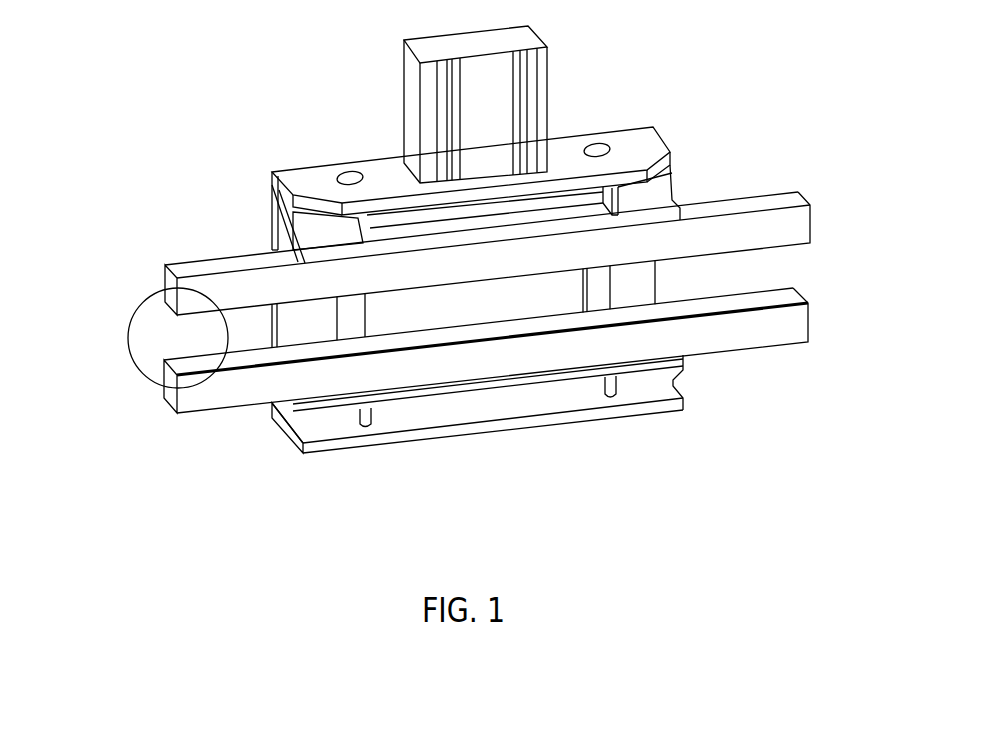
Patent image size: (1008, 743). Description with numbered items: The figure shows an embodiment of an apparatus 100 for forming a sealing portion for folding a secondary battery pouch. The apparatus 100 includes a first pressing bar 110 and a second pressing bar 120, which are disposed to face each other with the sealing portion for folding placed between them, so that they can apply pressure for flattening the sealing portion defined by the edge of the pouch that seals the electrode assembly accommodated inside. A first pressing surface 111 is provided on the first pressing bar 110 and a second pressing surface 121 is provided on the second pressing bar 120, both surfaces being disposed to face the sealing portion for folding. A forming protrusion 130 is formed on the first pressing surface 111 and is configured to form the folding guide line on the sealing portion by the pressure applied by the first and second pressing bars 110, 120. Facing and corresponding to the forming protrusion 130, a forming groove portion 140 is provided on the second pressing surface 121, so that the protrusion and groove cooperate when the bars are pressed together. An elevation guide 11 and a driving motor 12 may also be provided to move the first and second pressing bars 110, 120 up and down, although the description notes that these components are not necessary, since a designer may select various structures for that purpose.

The apparatus for forming a sealing portion for folding 100 is at (165, 94).
The driving motor 12 is at (413, 93).
The first pressing bar 110 is at (233, 280).
The elevation guide 11 is at (353, 318).
The first pressing surface 111 is at (165, 342).
The second pressing bar 120 is at (227, 397).
The forming protrusion 130 is at (170, 357).
The second pressing surface 121 is at (782, 295).
The forming groove portion 140 is at (730, 313).